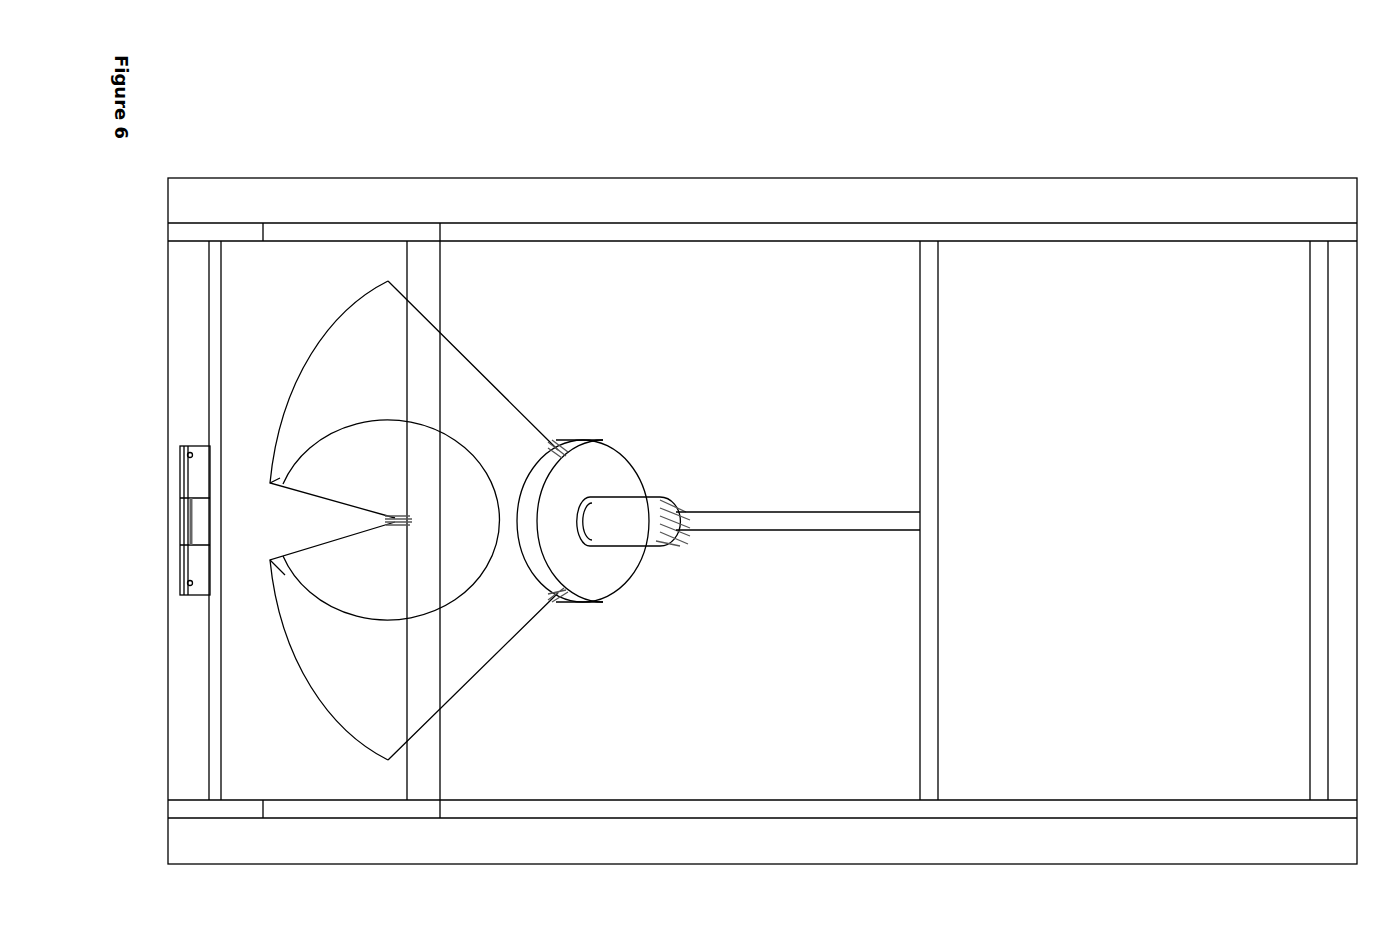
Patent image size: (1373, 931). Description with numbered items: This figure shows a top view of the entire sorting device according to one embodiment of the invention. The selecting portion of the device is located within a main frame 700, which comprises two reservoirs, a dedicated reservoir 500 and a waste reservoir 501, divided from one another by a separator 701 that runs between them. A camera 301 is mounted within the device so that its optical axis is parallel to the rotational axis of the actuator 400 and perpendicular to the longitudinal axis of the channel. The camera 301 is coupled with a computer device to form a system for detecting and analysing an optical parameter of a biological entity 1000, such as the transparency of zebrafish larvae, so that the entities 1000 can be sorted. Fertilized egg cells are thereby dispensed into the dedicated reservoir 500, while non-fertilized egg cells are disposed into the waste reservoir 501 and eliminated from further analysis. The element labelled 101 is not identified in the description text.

The main frame 700 is at (1025, 232).
The reservoir 500 is at (720, 315).
The waste reservoir 501 is at (753, 771).
The camera 301 is at (190, 518).
The blade 101 is at (396, 455).
The biological entity 1000 is at (400, 515).
The actuator 400 is at (630, 508).
The separator 701 is at (790, 520).